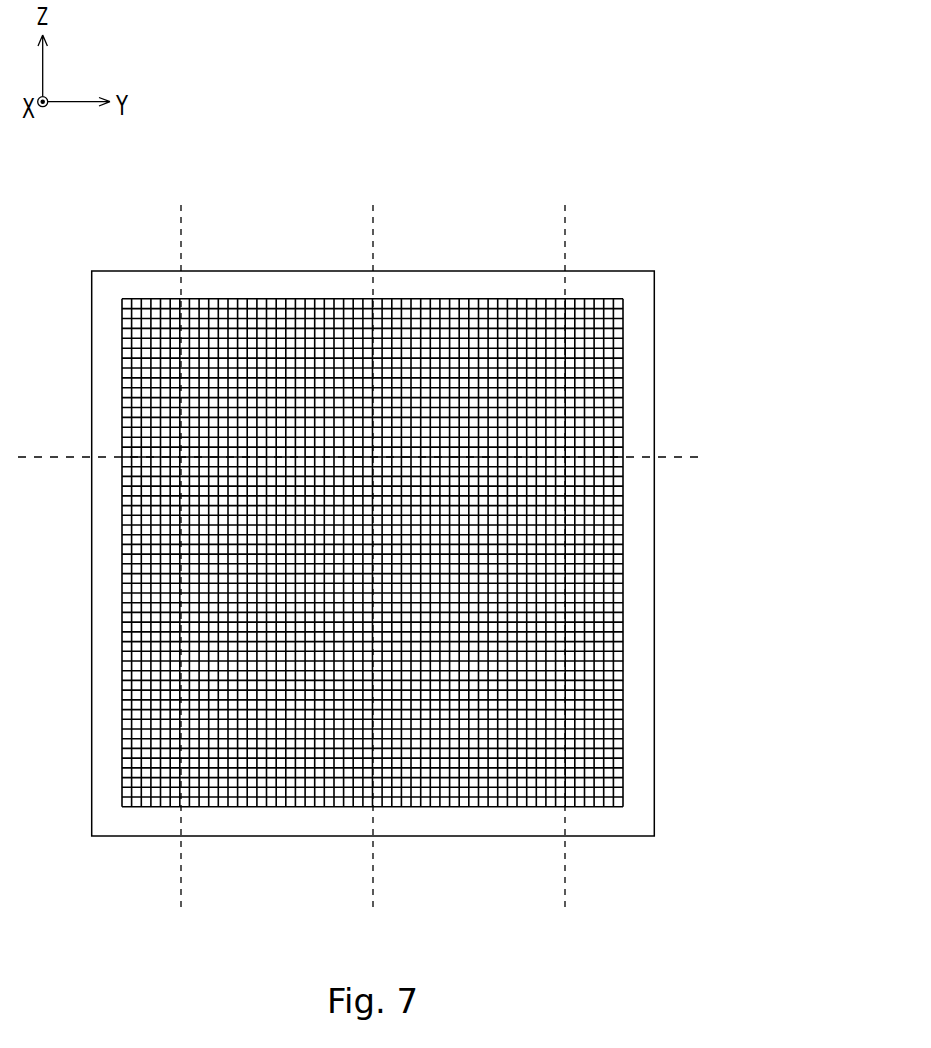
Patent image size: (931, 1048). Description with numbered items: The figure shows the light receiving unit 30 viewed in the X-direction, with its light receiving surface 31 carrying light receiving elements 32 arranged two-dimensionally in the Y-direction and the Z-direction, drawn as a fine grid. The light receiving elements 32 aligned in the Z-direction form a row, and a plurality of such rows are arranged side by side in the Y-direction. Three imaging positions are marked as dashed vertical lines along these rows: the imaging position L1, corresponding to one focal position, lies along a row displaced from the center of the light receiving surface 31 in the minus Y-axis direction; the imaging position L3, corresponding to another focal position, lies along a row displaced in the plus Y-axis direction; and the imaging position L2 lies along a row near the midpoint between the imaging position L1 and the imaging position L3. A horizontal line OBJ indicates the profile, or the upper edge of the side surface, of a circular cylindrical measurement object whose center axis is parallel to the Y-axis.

The light receiving unit 30 is at (374, 127).
The light receiving surface 31 is at (632, 288).
The light receiving elements 32 is at (620, 318).
The imaging position L1 is at (178, 540).
The imaging position L2 is at (370, 540).
The imaging position L3 is at (562, 540).
The line OBJ is at (383, 460).